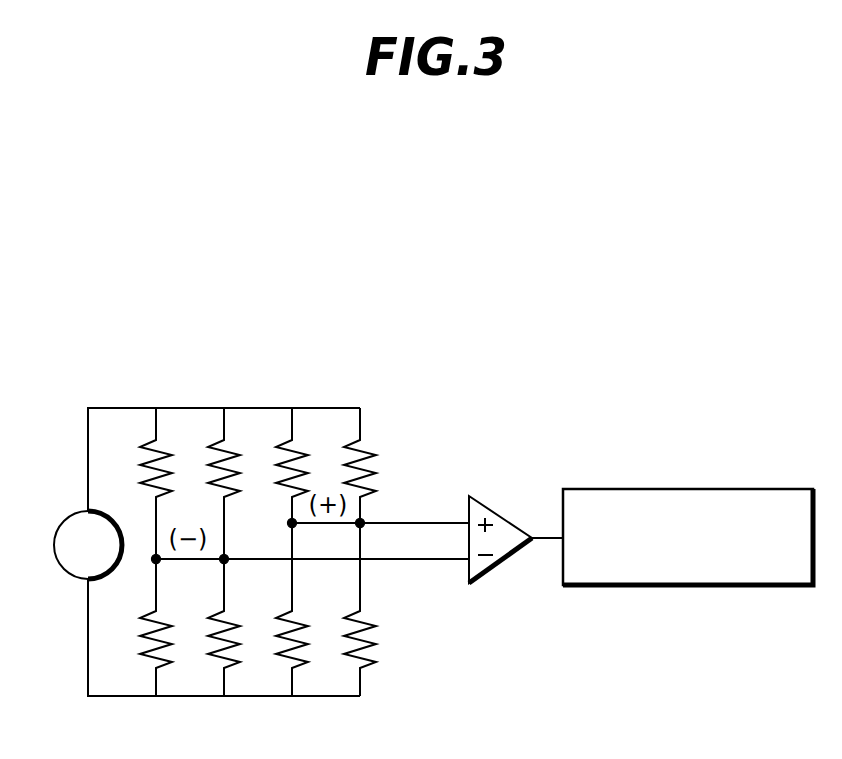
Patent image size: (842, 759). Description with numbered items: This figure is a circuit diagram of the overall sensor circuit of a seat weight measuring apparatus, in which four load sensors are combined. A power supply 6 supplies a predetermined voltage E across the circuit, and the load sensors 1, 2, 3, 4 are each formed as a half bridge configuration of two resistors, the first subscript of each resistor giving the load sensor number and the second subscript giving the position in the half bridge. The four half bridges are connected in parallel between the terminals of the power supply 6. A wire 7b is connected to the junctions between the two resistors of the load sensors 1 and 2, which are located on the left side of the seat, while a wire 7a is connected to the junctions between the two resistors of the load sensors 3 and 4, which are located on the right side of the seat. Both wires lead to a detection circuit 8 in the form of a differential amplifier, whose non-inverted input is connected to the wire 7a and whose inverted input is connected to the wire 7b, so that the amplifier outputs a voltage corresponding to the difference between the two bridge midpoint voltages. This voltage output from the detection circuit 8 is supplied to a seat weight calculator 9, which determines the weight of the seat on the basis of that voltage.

The load sensor 1 is at (156, 399).
The load sensor 2 is at (225, 399).
The load sensor 3 is at (292, 399).
The load sensor 4 is at (360, 399).
The power supply 6 is at (60, 522).
The wire 7a is at (395, 522).
The wire 7b is at (420, 560).
The detection circuit 8 is at (490, 502).
The seat weight calculator 9 is at (690, 489).